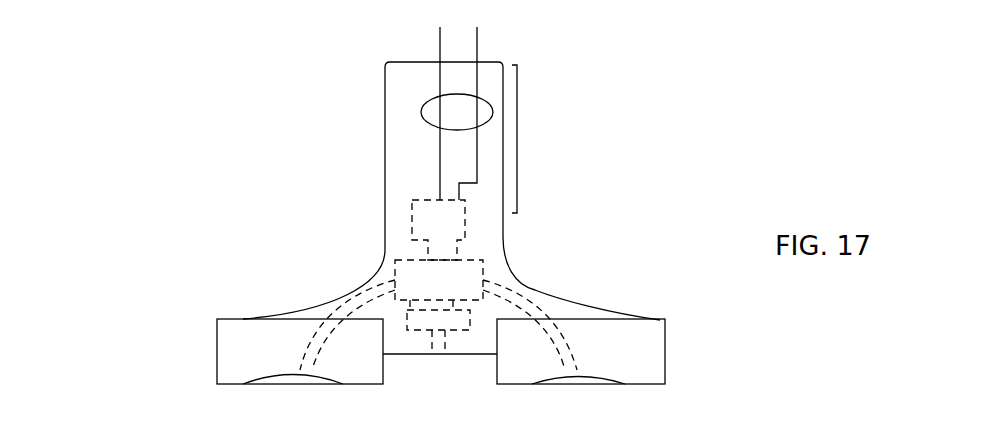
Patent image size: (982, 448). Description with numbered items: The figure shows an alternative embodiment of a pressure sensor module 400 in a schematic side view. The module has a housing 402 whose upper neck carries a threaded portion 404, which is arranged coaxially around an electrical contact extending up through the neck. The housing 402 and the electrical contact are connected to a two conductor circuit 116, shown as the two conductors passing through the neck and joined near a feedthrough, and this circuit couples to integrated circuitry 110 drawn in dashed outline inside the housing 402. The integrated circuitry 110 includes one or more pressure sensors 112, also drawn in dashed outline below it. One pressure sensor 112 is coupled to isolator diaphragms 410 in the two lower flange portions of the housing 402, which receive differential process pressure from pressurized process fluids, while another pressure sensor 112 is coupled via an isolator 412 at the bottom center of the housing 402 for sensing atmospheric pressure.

The pressure sensor module 400 is at (162, 66).
The housing 402 is at (535, 290).
The threaded portion 404 is at (518, 148).
The two conductor circuit 116 is at (421, 110).
The integrated circuitry 110 is at (427, 223).
The pressure sensor 112 is at (420, 318).
The isolator diaphragms 410 is at (288, 386).
The isolator 412 is at (452, 354).